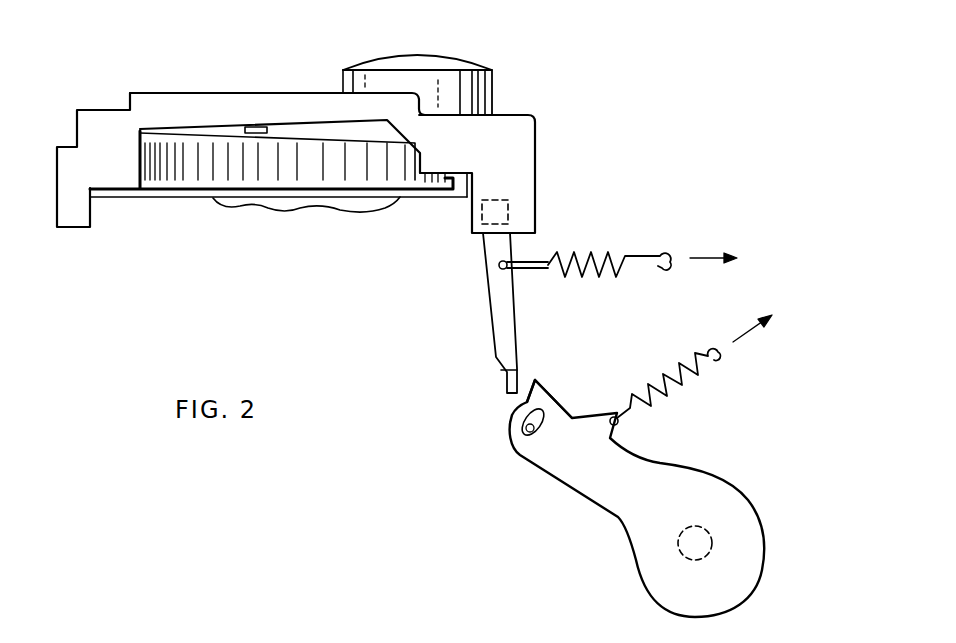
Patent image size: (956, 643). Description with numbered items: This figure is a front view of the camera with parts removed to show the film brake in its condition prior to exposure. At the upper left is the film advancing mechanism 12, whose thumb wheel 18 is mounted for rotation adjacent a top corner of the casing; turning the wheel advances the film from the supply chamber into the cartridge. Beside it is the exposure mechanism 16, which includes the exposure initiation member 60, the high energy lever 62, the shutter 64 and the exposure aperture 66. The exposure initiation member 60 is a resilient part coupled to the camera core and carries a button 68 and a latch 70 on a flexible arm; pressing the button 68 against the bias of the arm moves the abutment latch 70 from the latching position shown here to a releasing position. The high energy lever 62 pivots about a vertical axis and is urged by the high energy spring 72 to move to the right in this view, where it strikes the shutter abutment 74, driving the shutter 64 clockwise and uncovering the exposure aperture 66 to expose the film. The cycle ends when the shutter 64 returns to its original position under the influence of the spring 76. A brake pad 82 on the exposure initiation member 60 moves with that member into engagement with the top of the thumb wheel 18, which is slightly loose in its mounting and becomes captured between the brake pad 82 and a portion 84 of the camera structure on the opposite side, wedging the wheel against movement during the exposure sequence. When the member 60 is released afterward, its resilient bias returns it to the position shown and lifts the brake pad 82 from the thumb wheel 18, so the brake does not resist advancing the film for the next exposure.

The film advancing mechanism 12 is at (165, 218).
The exposure mechanism 16 is at (465, 462).
The thumb wheel 18 is at (173, 157).
The exposure initiation member 60 is at (512, 128).
The high energy lever 62 is at (500, 312).
The shutter 64 is at (653, 572).
The exposure aperture 66 is at (705, 538).
The button 68 is at (418, 80).
The latch 70 is at (520, 210).
The high energy spring 72 is at (647, 253).
The shutter abutment 74 is at (543, 388).
The spring 76 is at (697, 397).
The brake pad 82 is at (259, 128).
The portion of the camera structure 84 is at (272, 213).